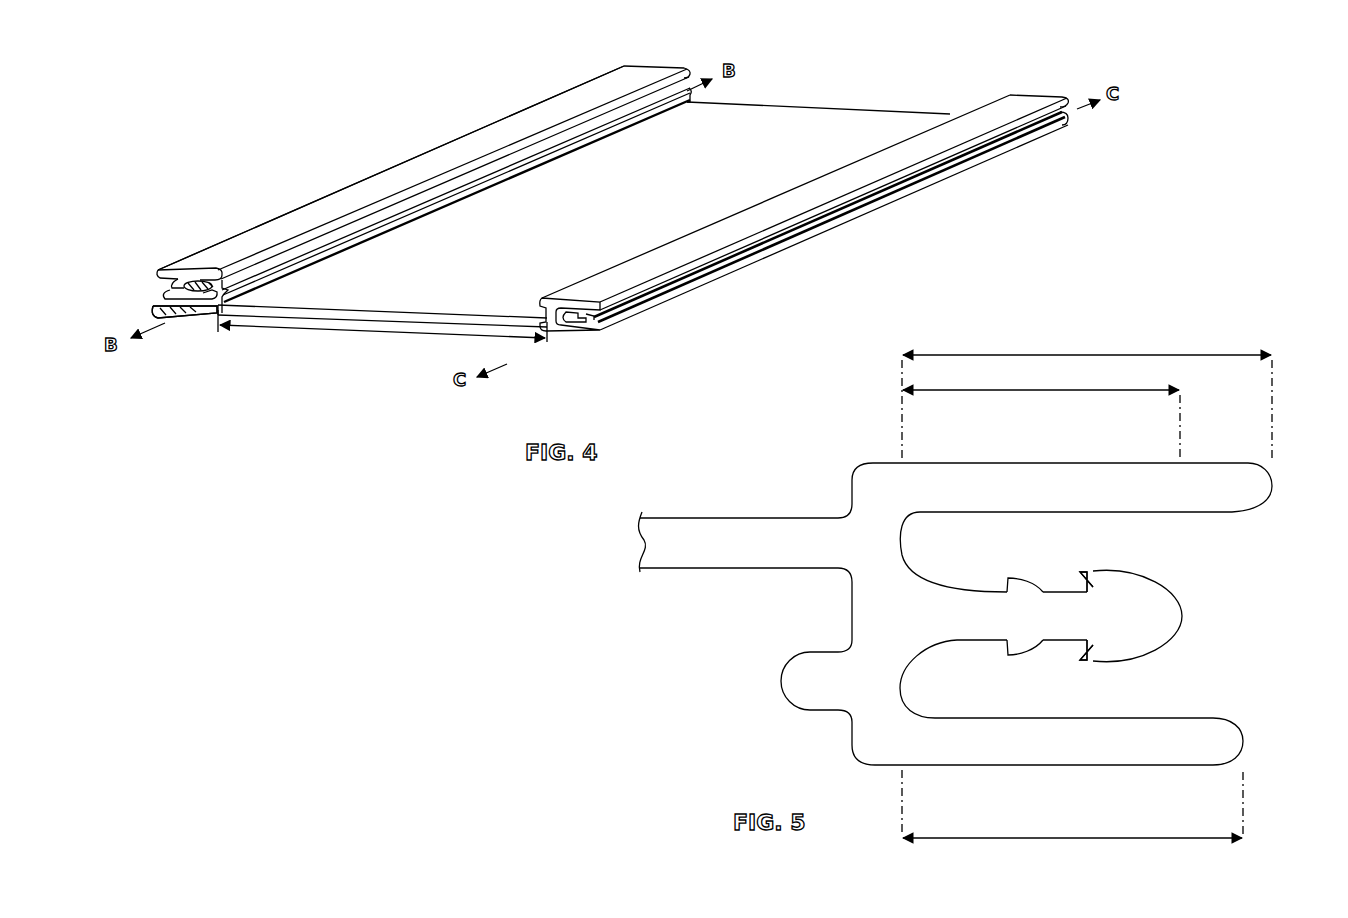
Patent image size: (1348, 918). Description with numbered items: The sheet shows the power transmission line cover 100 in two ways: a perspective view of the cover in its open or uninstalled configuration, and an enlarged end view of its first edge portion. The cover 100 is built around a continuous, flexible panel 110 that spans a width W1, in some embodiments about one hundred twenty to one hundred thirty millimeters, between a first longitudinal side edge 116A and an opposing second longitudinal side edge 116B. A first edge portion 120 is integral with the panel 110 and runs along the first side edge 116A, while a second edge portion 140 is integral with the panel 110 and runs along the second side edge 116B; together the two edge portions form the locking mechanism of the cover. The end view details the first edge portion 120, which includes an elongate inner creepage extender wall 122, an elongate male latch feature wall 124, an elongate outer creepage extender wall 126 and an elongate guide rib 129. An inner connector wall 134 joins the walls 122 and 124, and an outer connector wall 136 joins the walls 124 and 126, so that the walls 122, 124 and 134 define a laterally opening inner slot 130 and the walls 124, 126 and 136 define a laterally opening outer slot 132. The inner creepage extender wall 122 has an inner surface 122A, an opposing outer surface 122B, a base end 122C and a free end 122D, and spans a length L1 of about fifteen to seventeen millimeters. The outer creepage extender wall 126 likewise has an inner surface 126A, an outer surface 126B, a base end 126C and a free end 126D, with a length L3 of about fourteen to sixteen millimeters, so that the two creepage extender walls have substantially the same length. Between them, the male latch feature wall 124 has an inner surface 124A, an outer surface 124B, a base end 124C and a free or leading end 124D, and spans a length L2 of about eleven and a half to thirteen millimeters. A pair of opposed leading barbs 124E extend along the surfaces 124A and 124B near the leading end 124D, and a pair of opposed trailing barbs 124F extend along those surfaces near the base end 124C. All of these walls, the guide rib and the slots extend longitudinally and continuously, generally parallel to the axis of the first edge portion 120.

In FIG. 4, the cover 100 is at (296, 93).
In FIG. 4, the panel 110 is at (758, 121).
In FIG. 5, the panel 110 is at (718, 526).
In FIG. 4, the first longitudinal side edge 116A is at (213, 313).
In FIG. 4, the second longitudinal side edge 116B is at (553, 331).
In FIG. 4, the first edge portion 120 is at (357, 195).
In FIG. 5, the first edge portion 120 is at (845, 375).
In FIG. 5, the inner creepage extender wall 122 is at (1134, 473).
In FIG. 5, the inner surface 122A is at (1040, 463).
In FIG. 5, the outer surface 122B is at (1015, 513).
In FIG. 5, the base end 122C is at (893, 491).
In FIG. 5, the free end 122D is at (1272, 483).
In FIG. 5, the male latch feature wall 124 is at (1143, 625).
In FIG. 5, the inner surface 124A is at (1045, 590).
In FIG. 5, the outer surface 124B is at (1053, 641).
In FIG. 5, the base end 124C is at (953, 625).
In FIG. 5, the leading end 124D is at (1180, 607).
In FIG. 5, the leading latch features 124E is at (1091, 583).
In FIG. 5, the trailing latch features 124F is at (1008, 587).
In FIG. 5, the outer creepage extender wall 126 is at (1143, 758).
In FIG. 5, the inner surface 126A is at (987, 717).
In FIG. 5, the outer surface 126B is at (1090, 767).
In FIG. 5, the base end 126C is at (925, 757).
In FIG. 5, the free end 126D is at (1247, 745).
In FIG. 5, the guide rib 129 is at (798, 678).
In FIG. 5, the inner slot 130 is at (1141, 547).
In FIG. 5, the outer slot 132 is at (1141, 692).
In FIG. 5, the inner connector wall 134 is at (868, 558).
In FIG. 5, the outer connector wall 136 is at (865, 708).
In FIG. 4, the second edge portion 140 is at (720, 222).
In FIG. 4, the width W1 is at (378, 339).
In FIG. 5, the length L1 is at (1087, 354).
In FIG. 5, the length L2 is at (1042, 391).
In FIG. 5, the length L3 is at (1033, 838).